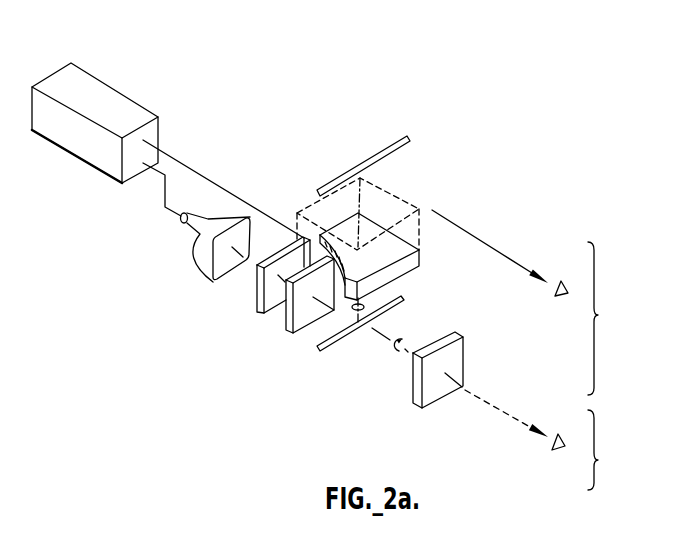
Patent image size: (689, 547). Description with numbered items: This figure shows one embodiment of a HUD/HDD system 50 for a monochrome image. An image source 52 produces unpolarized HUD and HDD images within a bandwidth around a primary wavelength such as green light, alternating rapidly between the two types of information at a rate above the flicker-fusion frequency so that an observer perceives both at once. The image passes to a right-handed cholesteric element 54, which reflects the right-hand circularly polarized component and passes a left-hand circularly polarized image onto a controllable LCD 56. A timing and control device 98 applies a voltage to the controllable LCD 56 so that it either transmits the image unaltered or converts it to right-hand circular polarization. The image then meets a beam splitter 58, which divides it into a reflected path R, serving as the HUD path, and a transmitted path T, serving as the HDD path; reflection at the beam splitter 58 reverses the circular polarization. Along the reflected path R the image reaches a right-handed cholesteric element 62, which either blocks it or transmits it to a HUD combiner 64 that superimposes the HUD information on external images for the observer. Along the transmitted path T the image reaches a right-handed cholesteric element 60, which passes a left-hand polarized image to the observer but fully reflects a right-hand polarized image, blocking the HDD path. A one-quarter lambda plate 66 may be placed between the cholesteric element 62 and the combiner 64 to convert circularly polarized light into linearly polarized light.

The HUD/HDD system 50 is at (194, 32).
The timing and control device 98 is at (117, 91).
The image source 52 is at (198, 272).
The cholesteric element 54 is at (257, 316).
The controllable LCD 56 is at (288, 340).
The beam splitter 58 is at (328, 352).
The right-handed cholesteric element 60 is at (416, 411).
The right-handed cholesteric element 62 is at (419, 254).
The HUD combiner 64 is at (403, 152).
The one-quarter lambda plate 66 is at (413, 213).
The reflected path R is at (372, 303).
The transmitted path T is at (396, 349).